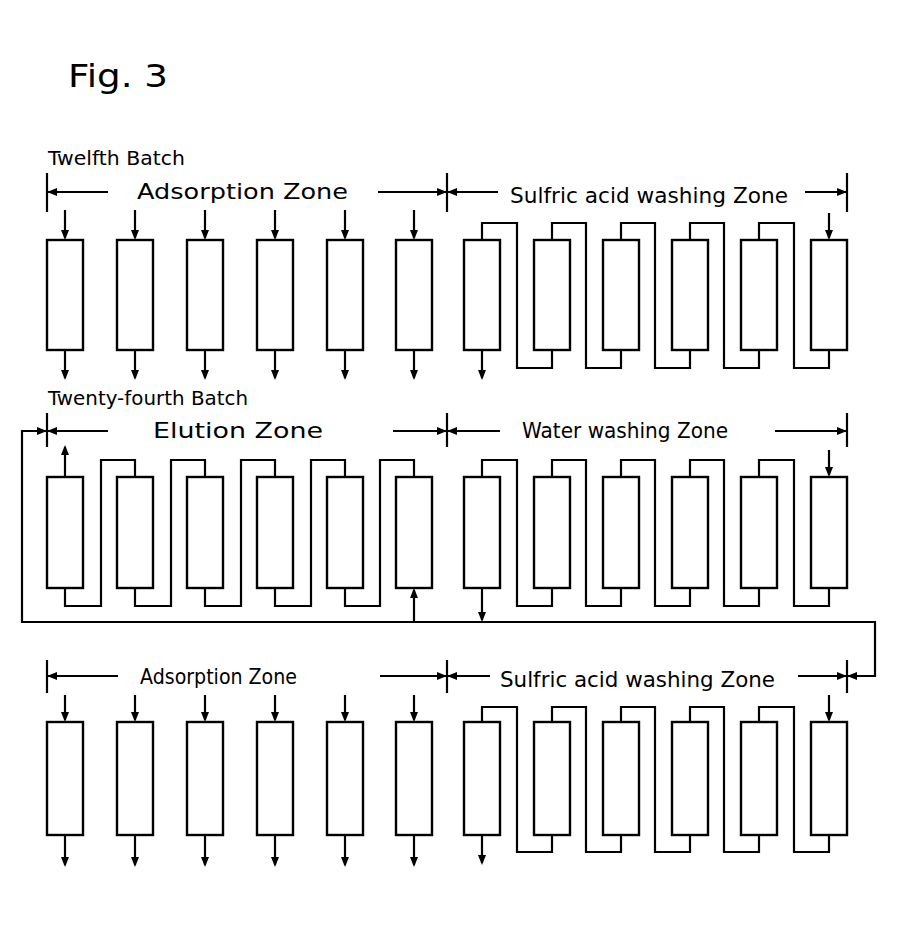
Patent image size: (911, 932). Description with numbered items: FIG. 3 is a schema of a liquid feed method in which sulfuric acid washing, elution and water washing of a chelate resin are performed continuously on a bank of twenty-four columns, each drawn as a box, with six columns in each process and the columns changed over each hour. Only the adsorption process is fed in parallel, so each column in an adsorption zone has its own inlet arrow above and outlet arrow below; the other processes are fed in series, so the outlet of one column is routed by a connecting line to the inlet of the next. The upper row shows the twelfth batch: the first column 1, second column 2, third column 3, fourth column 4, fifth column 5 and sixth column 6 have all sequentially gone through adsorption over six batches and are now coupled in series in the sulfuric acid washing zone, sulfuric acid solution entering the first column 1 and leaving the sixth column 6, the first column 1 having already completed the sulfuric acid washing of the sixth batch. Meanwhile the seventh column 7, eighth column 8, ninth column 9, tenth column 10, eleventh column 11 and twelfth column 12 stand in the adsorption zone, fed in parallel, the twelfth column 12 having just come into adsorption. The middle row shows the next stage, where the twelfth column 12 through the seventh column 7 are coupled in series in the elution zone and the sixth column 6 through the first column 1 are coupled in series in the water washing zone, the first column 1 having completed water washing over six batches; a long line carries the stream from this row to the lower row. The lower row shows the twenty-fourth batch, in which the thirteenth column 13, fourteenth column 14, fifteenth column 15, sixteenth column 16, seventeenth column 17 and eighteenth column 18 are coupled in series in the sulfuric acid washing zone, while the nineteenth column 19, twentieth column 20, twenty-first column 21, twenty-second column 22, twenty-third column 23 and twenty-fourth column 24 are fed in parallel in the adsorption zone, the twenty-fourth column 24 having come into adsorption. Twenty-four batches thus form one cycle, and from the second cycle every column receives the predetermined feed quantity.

The first column 1 is at (829, 414).
The second column 2 is at (759, 414).
The third column 3 is at (690, 414).
The fourth column 4 is at (621, 414).
The fifth column 5 is at (552, 414).
The sixth column 6 is at (482, 414).
The seventh column 7 is at (414, 414).
The eighth column 8 is at (345, 414).
The ninth column 9 is at (275, 414).
The tenth column 10 is at (205, 414).
The eleventh column 11 is at (135, 414).
The twelfth column 12 is at (65, 414).
The thirteenth column 13 is at (829, 778).
The fourteenth column 14 is at (759, 778).
The fifteenth column 15 is at (690, 778).
The sixteenth column 16 is at (621, 778).
The seventeenth column 17 is at (552, 778).
The eighteenth column 18 is at (482, 778).
The nineteenth column 19 is at (414, 778).
The twentieth column 20 is at (345, 778).
The twenty-first column 21 is at (275, 778).
The twenty-second column 22 is at (205, 778).
The twenty-third column 23 is at (135, 778).
The twenty-fourth column 24 is at (65, 778).